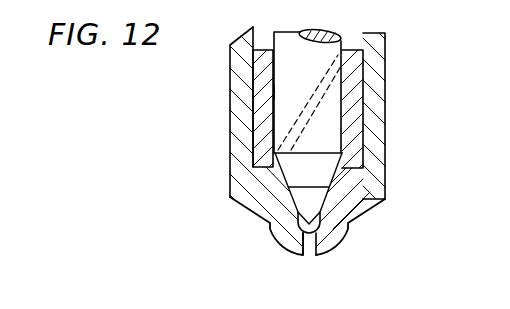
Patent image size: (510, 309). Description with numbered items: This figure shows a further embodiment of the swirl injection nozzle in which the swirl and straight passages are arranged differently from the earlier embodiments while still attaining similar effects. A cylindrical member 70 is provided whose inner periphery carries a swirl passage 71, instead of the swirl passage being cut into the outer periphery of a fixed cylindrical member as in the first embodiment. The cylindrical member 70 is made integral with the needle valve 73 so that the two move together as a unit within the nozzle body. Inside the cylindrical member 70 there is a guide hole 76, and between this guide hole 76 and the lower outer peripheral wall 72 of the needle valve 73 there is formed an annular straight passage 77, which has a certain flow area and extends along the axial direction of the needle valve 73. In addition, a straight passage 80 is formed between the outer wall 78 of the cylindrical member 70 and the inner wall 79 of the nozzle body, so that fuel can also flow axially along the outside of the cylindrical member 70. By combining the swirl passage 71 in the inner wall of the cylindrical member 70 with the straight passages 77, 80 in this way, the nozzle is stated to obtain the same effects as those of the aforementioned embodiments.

The cylindrical member 70 is at (366, 95).
The swirl passage 71 is at (305, 111).
The lower outer peripheral wall 72 is at (366, 208).
The needle valve 73 is at (283, 64).
The guide hole 76 is at (268, 95).
The annular straight passage 77 is at (324, 144).
The outer wall 78 is at (253, 148).
The inner wall 79 is at (258, 120).
The straight passage 80 is at (246, 142).